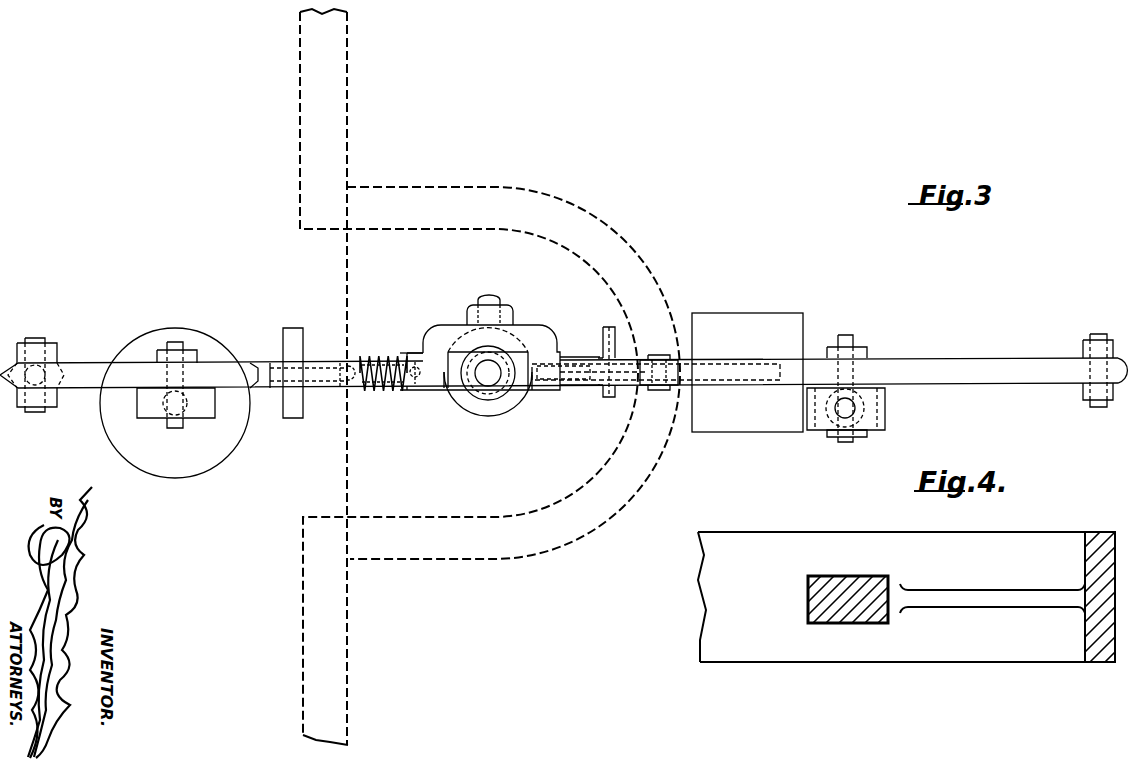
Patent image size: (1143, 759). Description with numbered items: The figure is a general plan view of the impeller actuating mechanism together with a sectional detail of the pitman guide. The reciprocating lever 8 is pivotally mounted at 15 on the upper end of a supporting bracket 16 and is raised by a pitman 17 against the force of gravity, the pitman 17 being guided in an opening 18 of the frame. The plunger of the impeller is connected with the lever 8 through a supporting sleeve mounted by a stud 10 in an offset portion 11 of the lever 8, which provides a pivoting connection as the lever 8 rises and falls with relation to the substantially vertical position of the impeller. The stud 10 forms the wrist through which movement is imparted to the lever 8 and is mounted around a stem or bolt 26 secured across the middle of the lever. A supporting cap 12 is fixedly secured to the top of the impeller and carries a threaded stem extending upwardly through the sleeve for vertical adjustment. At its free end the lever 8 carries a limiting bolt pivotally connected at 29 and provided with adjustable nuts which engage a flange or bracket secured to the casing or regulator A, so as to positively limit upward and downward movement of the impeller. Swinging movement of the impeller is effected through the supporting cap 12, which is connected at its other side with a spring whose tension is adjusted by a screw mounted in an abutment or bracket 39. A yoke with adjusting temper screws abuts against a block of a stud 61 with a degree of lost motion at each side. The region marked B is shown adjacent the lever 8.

In FIG. 3, the reciprocating lever 8 is at (907, 368).
In FIG. 3, the stud 10 is at (493, 300).
In FIG. 3, the offset portion 11 is at (457, 333).
In FIG. 3, the supporting cap 12 is at (473, 403).
In FIG. 3, the pivot 15 is at (1103, 407).
In FIG. 4, the supporting bracket 16 is at (1092, 556).
In FIG. 4, the pitman 17 is at (863, 613).
In FIG. 4, the opening 18 is at (823, 623).
In FIG. 3, the stem or bolt 26 is at (848, 442).
In FIG. 3, the pivotal connection 29 is at (35, 412).
In FIG. 3, the abutment or bracket 39 is at (295, 410).
In FIG. 3, the stud 61 is at (175, 425).
In FIG. 3, the casing or regulator A is at (208, 458).
In FIG. 3, the block B is at (765, 422).